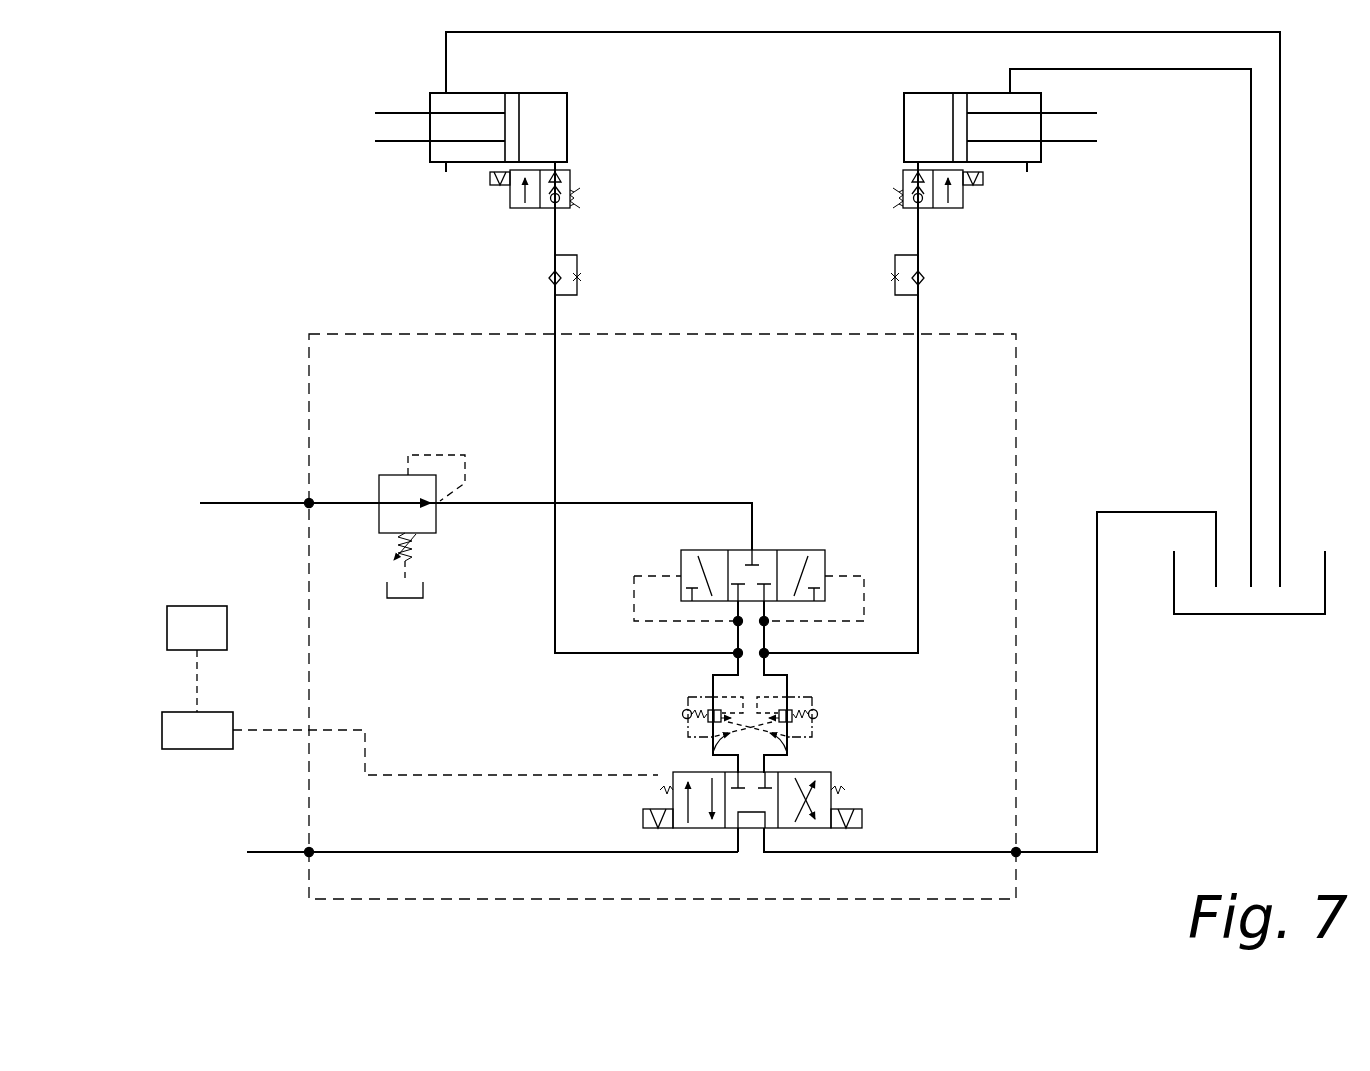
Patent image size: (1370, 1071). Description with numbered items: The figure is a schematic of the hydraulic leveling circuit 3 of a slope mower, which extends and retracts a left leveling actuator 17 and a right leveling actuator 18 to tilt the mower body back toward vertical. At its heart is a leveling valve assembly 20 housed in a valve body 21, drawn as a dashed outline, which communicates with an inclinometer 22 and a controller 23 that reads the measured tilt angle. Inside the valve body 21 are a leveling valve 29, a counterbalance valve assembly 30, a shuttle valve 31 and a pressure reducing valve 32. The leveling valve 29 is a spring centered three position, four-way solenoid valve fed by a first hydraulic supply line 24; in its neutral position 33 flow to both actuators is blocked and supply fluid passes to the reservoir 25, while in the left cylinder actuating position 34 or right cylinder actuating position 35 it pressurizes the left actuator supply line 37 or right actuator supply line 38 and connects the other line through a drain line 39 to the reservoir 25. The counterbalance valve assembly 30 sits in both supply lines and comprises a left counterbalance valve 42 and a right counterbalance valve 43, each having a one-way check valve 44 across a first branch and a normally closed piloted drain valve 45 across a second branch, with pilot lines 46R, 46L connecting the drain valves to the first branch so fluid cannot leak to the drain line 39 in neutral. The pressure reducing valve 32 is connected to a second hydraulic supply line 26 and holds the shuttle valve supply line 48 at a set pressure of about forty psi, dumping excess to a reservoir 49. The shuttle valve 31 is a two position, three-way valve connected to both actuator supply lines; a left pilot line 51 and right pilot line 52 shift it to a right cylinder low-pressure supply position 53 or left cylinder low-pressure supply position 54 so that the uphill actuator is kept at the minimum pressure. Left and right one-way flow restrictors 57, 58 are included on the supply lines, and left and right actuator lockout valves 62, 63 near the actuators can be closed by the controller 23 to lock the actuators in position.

The hydraulic leveling circuit 3 is at (228, 186).
The left leveling actuator 17 is at (431, 110).
The right leveling actuator 18 is at (1041, 143).
The leveling valve assembly 20 is at (307, 402).
The valve body 21 is at (309, 334).
The inclinometer 22 is at (197, 628).
The controller 23 is at (410, 712).
The first hydraulic supply line 24 is at (272, 852).
The reservoir 25 is at (1247, 615).
The second hydraulic supply line 26 is at (228, 503).
The leveling valve 29 is at (878, 797).
The counterbalance valve assembly 30 is at (860, 706).
The shuttle valve 31 is at (838, 522).
The pressure reducing valve 32 is at (379, 476).
The neutral position 33 is at (752, 830).
The left cylinder actuating position 34 is at (673, 830).
The right cylinder actuating position 35 is at (828, 830).
The left actuator supply line 37 is at (555, 320).
The right actuator supply line 38 is at (918, 320).
The drain line 39 is at (1097, 796).
The left counterbalance valve 42 is at (637, 681).
The right counterbalance valve 43 is at (810, 700).
The one-way check valve 44 is at (683, 712).
The piloted drain valve 45 is at (708, 708).
The pilot line 46R is at (713, 750).
The pilot line 46L is at (787, 750).
The shuttle valve supply line 48 is at (650, 503).
The reservoir 49 is at (393, 598).
The left pilot line 51 is at (634, 590).
The right pilot line 52 is at (864, 590).
The right cylinder low-pressure supply position 53 is at (681, 550).
The left cylinder low-pressure supply position 54 is at (825, 550).
The left one-way flow restrictor 57 is at (555, 255).
The right one-way flow restrictor 58 is at (918, 255).
The left actuator lockout valve 62 is at (510, 200).
The right actuator lockout valve 63 is at (963, 202).